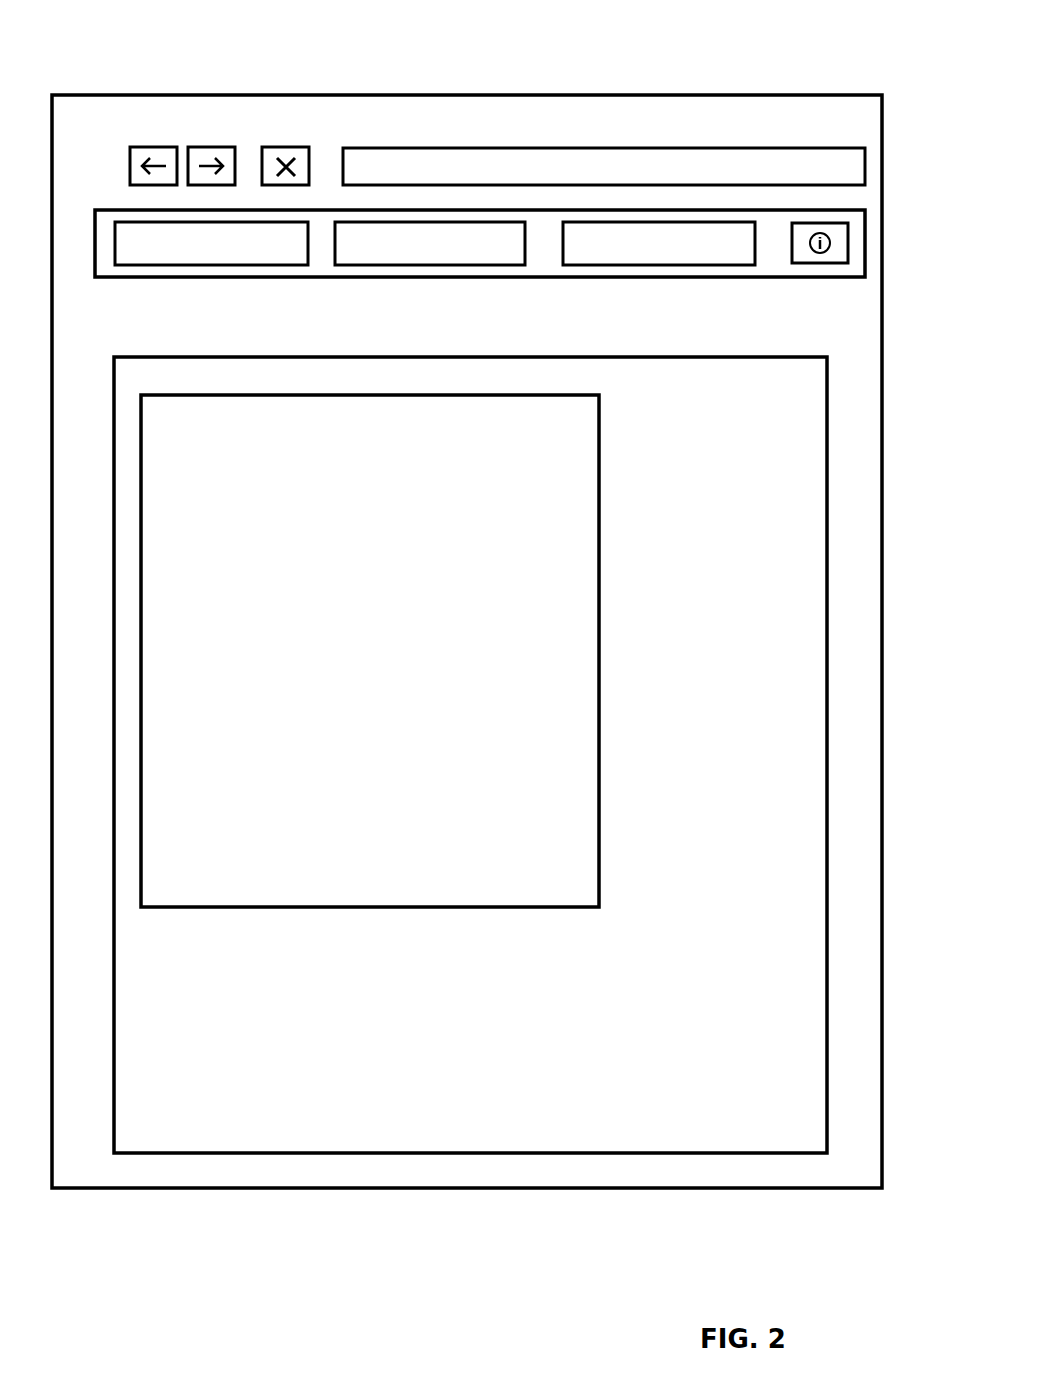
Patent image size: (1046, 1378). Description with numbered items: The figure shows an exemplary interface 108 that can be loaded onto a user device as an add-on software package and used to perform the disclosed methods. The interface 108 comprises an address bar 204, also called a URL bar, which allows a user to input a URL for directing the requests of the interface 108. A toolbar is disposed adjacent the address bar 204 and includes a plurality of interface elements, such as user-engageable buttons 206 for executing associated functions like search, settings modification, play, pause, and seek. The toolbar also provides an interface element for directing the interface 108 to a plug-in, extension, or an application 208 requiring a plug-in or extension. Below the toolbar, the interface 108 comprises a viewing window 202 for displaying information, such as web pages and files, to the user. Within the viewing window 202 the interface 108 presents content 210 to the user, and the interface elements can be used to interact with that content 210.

The interface 108 is at (165, 30).
The viewing window 202 is at (108, 1140).
The address bar 204 is at (494, 148).
The user-engageable buttons 206 is at (430, 265).
The application 208 is at (658, 272).
The content 210 is at (547, 914).